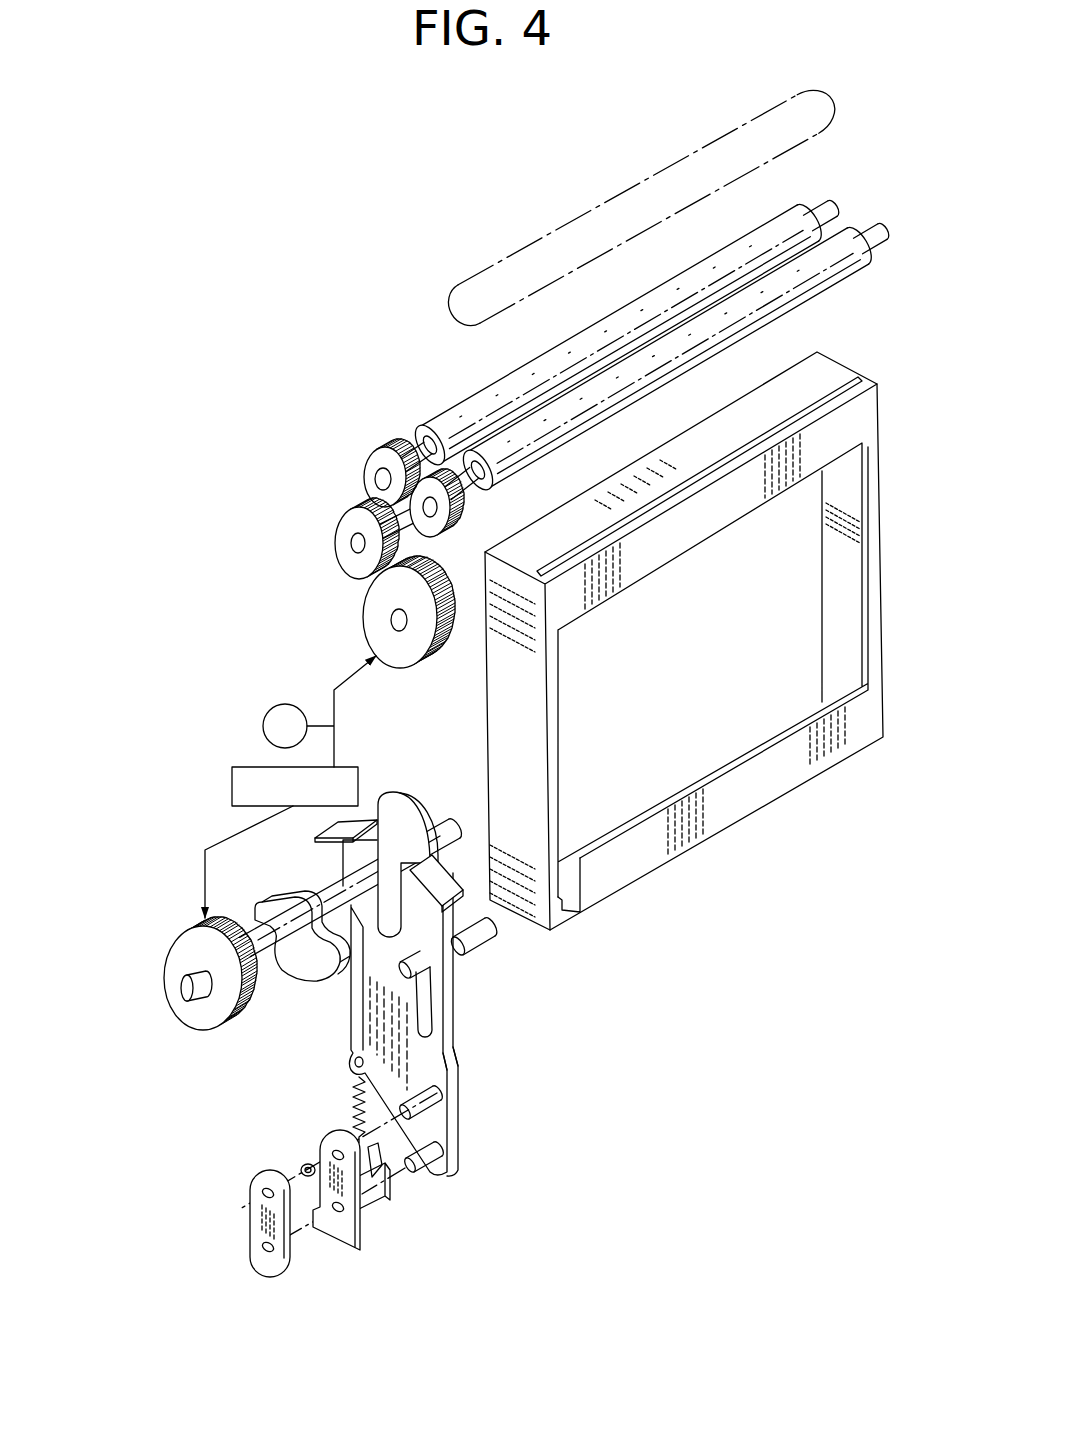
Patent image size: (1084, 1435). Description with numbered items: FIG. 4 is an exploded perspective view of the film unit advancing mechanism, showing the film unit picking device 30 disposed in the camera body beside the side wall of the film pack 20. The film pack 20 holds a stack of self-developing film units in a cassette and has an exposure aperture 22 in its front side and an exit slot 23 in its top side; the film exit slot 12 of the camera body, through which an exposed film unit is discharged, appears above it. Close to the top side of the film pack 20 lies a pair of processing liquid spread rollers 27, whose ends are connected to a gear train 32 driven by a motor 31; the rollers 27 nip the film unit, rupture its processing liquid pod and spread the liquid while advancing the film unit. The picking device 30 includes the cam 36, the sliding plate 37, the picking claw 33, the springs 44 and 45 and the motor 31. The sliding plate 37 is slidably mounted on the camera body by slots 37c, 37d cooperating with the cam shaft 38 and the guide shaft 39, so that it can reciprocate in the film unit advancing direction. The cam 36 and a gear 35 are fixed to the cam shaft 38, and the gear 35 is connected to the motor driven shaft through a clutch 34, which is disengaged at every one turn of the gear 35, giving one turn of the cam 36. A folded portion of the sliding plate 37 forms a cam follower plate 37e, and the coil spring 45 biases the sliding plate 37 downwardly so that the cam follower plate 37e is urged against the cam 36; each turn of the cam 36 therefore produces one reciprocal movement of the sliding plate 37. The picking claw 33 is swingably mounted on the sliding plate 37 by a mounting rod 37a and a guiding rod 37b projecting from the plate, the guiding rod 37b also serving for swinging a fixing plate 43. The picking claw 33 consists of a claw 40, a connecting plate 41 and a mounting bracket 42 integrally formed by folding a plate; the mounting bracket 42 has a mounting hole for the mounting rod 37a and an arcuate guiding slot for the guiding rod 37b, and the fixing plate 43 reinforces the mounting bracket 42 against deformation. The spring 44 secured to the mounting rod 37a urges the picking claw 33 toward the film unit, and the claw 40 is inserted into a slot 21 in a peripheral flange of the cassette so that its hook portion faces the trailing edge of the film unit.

The film exit slot 12 is at (460, 284).
The film pack 20 is at (689, 630).
The slot 21 is at (568, 908).
The exposure aperture 22 is at (695, 551).
The exit slot 23 is at (826, 392).
The processing liquid spread rollers 27 is at (431, 409).
The film unit picking device 30 is at (306, 752).
The motor 31 is at (262, 722).
The gear train 32 is at (345, 479).
The picking claw 33 is at (334, 1220).
The clutch 34 is at (250, 770).
The gear 35 is at (217, 1013).
The cam 36 is at (304, 962).
The sliding plate 37 is at (459, 1019).
The mounting rod 37a is at (455, 1098).
The guiding rod 37b is at (440, 1148).
The slot 37c is at (393, 906).
The slot 37d is at (453, 1043).
The cam follower plate 37e is at (323, 842).
The cam shaft 38 is at (452, 828).
The guide shaft 39 is at (487, 933).
The claw 40 is at (385, 1167).
The connecting plate 41 is at (372, 1197).
The mounting bracket 42 is at (327, 1143).
The fixing plate 43 is at (276, 1270).
The spring 44 is at (303, 1167).
The coil spring 45 is at (325, 1109).